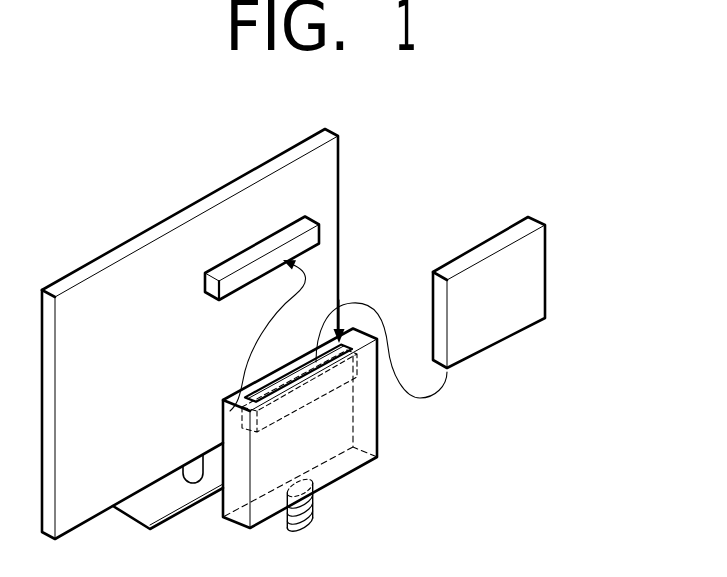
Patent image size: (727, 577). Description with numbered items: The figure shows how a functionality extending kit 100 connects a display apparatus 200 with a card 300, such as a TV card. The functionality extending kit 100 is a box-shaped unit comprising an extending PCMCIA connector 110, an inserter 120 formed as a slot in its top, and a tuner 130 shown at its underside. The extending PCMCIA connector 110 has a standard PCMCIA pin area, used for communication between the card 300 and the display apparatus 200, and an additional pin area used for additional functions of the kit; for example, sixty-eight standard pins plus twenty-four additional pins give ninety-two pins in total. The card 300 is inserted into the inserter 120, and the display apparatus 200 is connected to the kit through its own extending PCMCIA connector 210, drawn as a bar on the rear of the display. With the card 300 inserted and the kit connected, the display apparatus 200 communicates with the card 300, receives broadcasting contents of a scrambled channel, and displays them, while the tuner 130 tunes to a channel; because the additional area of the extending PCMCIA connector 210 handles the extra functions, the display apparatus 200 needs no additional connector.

The functionality extending kit 100 is at (361, 467).
The extending PCMCIA connector 110 is at (228, 413).
The inserter 120 is at (345, 334).
The tuner 130 is at (313, 508).
The display apparatus 200 is at (143, 232).
The extending PCMCIA connector 210 is at (319, 226).
The card 300 is at (498, 343).